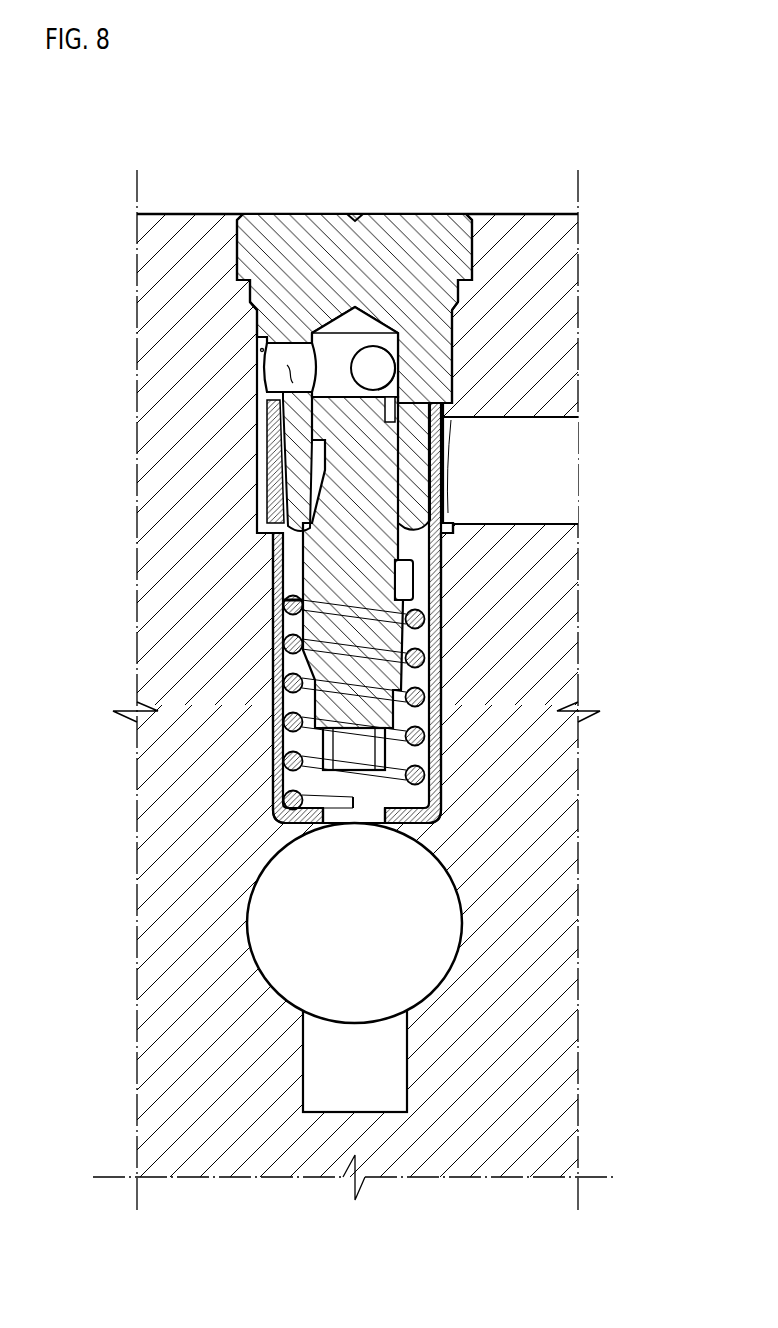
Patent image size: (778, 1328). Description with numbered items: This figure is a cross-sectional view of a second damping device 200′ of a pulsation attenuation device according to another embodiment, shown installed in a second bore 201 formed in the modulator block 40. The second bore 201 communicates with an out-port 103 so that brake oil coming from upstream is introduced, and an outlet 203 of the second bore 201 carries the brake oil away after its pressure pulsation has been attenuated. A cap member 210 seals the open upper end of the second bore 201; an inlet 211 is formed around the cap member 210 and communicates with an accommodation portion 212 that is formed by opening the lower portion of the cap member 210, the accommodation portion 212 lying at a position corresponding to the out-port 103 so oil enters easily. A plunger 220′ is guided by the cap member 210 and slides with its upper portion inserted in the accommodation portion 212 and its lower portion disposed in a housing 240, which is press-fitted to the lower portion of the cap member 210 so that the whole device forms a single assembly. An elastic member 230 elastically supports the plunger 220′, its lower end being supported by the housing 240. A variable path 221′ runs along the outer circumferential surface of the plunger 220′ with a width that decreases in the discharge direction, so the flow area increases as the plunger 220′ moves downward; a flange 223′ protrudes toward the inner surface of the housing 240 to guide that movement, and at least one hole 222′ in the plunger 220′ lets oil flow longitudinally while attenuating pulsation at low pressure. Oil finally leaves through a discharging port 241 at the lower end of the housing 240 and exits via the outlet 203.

The modulator block 40 is at (505, 998).
The out-port 103 is at (533, 486).
The second damping device 200′ is at (281, 188).
The cap member 210 is at (407, 234).
The second bore 201 is at (260, 355).
The inlet 211 is at (290, 370).
The accommodation portion 212 is at (313, 450).
The plunger 220′ is at (370, 590).
The variable path 221′ is at (293, 477).
The hole 222′ is at (437, 511).
The flange 223′ is at (290, 572).
The elastic member 230 is at (420, 656).
The housing 240 is at (430, 763).
The discharging port 241 is at (360, 820).
The outlet 203 is at (417, 886).